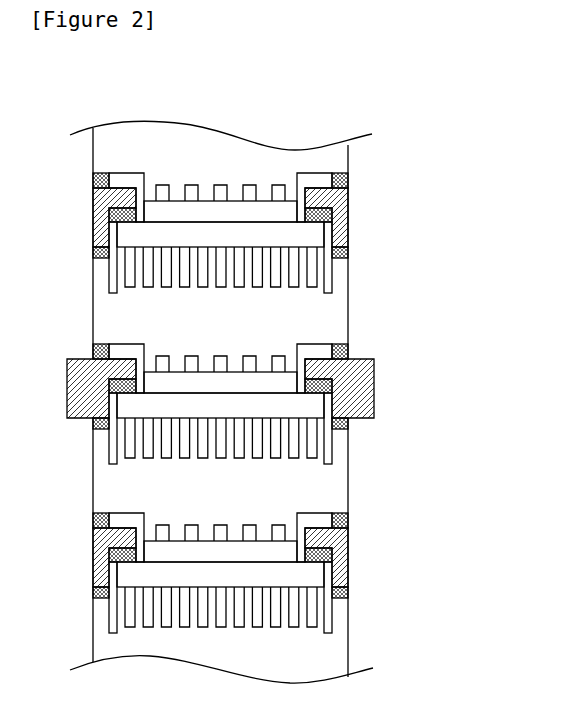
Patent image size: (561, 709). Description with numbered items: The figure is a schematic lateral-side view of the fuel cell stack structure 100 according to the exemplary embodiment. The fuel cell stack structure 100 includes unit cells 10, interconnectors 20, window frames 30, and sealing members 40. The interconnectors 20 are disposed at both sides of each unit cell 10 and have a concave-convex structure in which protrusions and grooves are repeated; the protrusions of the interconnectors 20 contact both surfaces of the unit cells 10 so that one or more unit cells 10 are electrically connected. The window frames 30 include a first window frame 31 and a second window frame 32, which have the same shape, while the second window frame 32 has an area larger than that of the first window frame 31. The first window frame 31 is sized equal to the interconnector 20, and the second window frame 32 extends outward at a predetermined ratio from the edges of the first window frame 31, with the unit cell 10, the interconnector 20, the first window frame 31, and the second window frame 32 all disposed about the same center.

The fuel cell stack structure 100 is at (64, 98).
The unit cell 10 is at (180, 211).
The interconnector 20 is at (348, 305).
The window frame 30 is at (394, 220).
The first window frame 31 is at (348, 215).
The second window frame 32 is at (375, 384).
The sealing member 40 is at (93, 183).